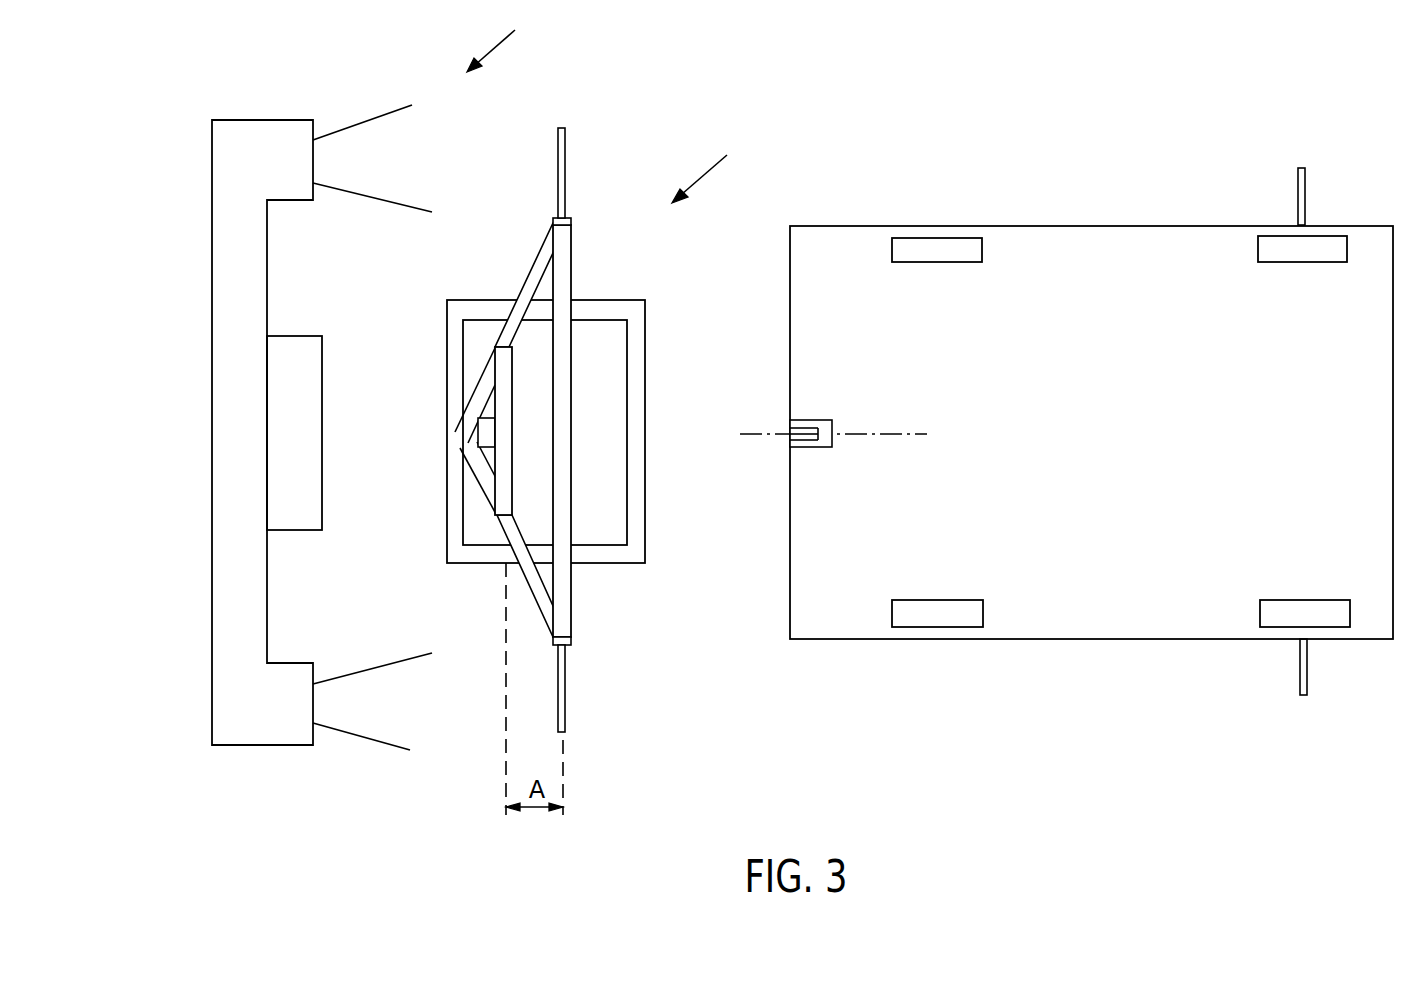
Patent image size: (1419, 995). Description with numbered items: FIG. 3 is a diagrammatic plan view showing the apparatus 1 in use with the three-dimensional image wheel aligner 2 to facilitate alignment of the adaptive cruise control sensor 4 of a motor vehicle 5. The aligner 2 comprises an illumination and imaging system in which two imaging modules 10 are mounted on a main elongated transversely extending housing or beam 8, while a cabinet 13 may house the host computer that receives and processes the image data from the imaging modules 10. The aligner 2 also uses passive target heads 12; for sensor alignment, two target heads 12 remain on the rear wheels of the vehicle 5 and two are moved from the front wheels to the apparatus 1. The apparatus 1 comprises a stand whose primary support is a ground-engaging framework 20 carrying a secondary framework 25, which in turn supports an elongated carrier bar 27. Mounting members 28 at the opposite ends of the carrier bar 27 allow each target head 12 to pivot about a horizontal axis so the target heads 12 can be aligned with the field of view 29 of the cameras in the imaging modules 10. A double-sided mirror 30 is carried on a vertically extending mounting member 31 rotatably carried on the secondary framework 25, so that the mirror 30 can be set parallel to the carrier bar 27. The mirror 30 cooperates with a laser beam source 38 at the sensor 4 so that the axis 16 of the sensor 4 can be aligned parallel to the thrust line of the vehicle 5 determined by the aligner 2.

The apparatus 1 is at (707, 170).
The 3D image wheel aligner 2 is at (501, 43).
The adaptive cruise control sensor 4 is at (817, 420).
The motor vehicle 5 is at (1083, 225).
The housing or beam 8 is at (215, 455).
The imaging modules 10 is at (313, 156).
The target heads 12 is at (565, 143).
The cabinet 13 is at (322, 387).
The axis 16 is at (912, 435).
The ground-engaging framework 20 is at (633, 558).
The secondary framework 25 is at (528, 275).
The carrier bar 27 is at (565, 281).
The mounting members 28 is at (571, 222).
The field of view 29 is at (372, 118).
The mirror 30 is at (505, 478).
The mounting member 31 is at (489, 432).
The laser beam source 38 is at (808, 447).